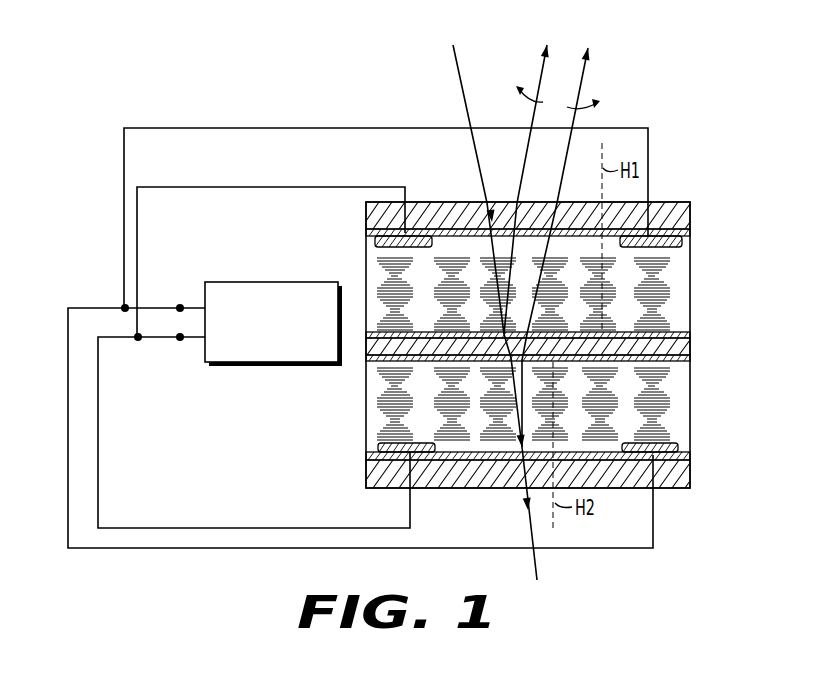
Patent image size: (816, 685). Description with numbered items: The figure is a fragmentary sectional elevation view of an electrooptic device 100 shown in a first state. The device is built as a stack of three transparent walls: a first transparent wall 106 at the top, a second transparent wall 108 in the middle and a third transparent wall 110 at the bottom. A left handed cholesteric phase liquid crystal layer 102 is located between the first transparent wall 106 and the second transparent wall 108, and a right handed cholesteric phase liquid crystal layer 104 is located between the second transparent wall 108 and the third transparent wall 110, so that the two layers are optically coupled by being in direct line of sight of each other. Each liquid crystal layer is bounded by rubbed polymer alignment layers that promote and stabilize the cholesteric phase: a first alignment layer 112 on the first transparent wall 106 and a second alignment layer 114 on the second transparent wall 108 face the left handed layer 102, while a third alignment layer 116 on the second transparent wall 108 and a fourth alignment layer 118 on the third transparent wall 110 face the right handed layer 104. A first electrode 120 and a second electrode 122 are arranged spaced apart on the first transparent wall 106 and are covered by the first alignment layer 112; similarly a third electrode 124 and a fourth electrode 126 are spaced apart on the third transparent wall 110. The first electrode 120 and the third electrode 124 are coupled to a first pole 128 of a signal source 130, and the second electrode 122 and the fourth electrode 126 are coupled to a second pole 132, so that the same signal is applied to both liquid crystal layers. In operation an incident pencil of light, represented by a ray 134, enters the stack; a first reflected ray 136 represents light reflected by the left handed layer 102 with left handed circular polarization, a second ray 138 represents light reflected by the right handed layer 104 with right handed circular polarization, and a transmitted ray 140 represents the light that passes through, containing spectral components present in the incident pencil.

The electrooptic device 100 is at (146, 109).
The left handed cholesteric phase liquid crystal layer 102 is at (670, 300).
The right handed cholesteric phase liquid crystal layer 104 is at (673, 405).
The first transparent wall 106 is at (690, 202).
The second transparent wall 108 is at (690, 345).
The third transparent wall 110 is at (690, 463).
The first alignment layer 112 is at (672, 247).
The second alignment layer 114 is at (680, 330).
The third alignment layer 116 is at (677, 360).
The fourth alignment layer 118 is at (673, 447).
The first electrode 120 is at (422, 232).
The second electrode 122 is at (656, 232).
The third electrode 124 is at (413, 463).
The fourth electrode 126 is at (660, 463).
The first pole 128 is at (205, 337).
The signal source 130 is at (275, 365).
The second pole 132 is at (205, 308).
The ray 134 is at (457, 77).
The first reflected ray 136 is at (538, 63).
The second ray 138 is at (577, 63).
The transmitted ray 140 is at (538, 572).